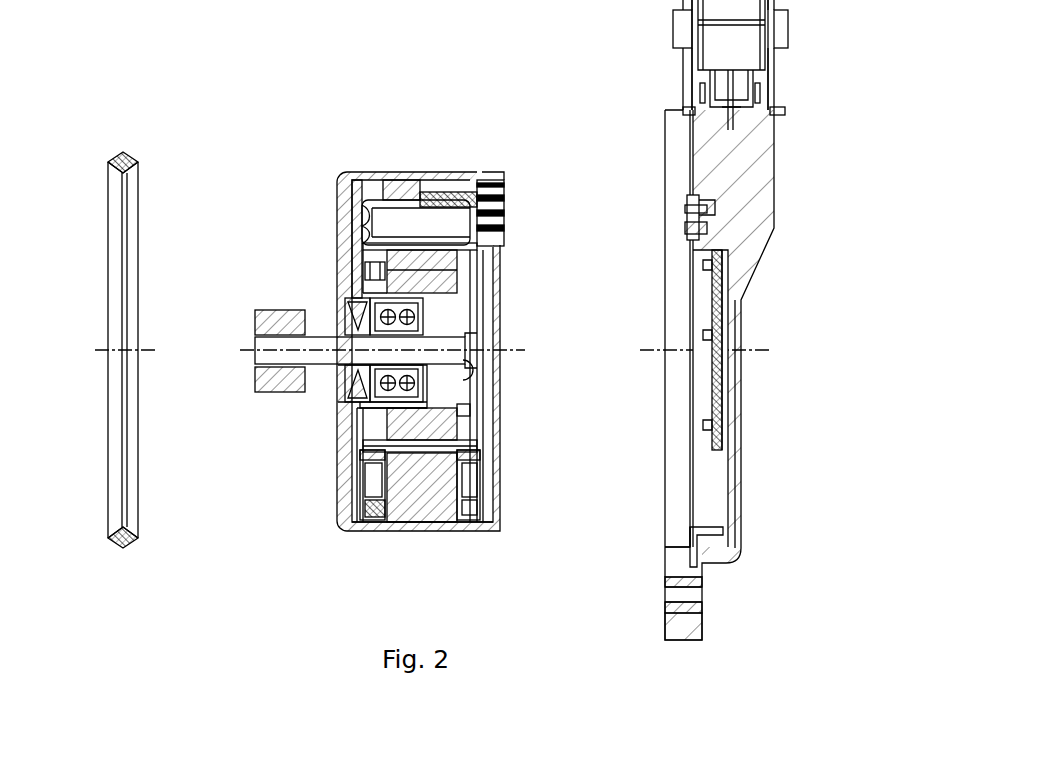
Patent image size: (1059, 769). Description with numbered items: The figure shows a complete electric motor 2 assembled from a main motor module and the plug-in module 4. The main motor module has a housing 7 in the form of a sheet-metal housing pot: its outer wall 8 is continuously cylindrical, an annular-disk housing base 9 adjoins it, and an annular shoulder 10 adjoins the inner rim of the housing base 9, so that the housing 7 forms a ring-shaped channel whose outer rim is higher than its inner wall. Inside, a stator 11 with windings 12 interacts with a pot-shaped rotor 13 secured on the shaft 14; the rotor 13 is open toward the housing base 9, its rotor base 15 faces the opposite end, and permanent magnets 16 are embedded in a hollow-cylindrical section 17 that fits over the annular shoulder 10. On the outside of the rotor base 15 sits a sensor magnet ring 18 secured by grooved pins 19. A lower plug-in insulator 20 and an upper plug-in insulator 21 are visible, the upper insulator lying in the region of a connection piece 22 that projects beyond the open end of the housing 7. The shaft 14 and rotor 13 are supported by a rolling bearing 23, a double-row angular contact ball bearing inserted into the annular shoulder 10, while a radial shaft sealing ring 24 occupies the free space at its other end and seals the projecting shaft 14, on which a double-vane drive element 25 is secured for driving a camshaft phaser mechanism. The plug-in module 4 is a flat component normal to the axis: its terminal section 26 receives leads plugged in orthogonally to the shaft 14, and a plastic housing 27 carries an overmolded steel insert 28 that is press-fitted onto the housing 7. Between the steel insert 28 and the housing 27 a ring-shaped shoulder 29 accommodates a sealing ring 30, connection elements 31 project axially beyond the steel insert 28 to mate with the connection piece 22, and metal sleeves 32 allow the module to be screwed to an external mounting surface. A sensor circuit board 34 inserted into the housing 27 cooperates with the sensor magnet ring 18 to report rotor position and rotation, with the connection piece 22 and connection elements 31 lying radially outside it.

The electric motor 2 is at (153, 74).
The plug-in module 4 is at (665, 150).
The housing 7 is at (375, 172).
The outer wall 8 is at (398, 528).
The housing base 9 is at (345, 205).
The annular shoulder 10 is at (382, 285).
The stator 11 is at (415, 505).
The windings 12 is at (372, 462).
The rotor 13 is at (475, 452).
The shaft 14 is at (255, 345).
The rotor base 15 is at (472, 292).
The permanent magnets 16 is at (472, 249).
The hollow-cylindrical section 17 is at (400, 270).
The sensor magnet ring 18 is at (475, 410).
The grooved pins 19 is at (475, 372).
The lower plug-in insulator 20 is at (367, 520).
The upper plug-in insulator 21 is at (505, 214).
The connection piece 22 is at (500, 195).
The rolling bearing 23 is at (372, 408).
The radial shaft sealing ring 24 is at (345, 305).
The double-vane drive element 25 is at (255, 378).
The terminal section 26 is at (772, 50).
The housing 27 is at (741, 470).
The steel insert 28 is at (705, 530).
The shoulder 29 is at (683, 539).
The sealing ring 30 is at (122, 154).
The connection elements 31 is at (700, 205).
The metal sleeves 32 is at (705, 578).
The sensor circuit board 34 is at (718, 293).